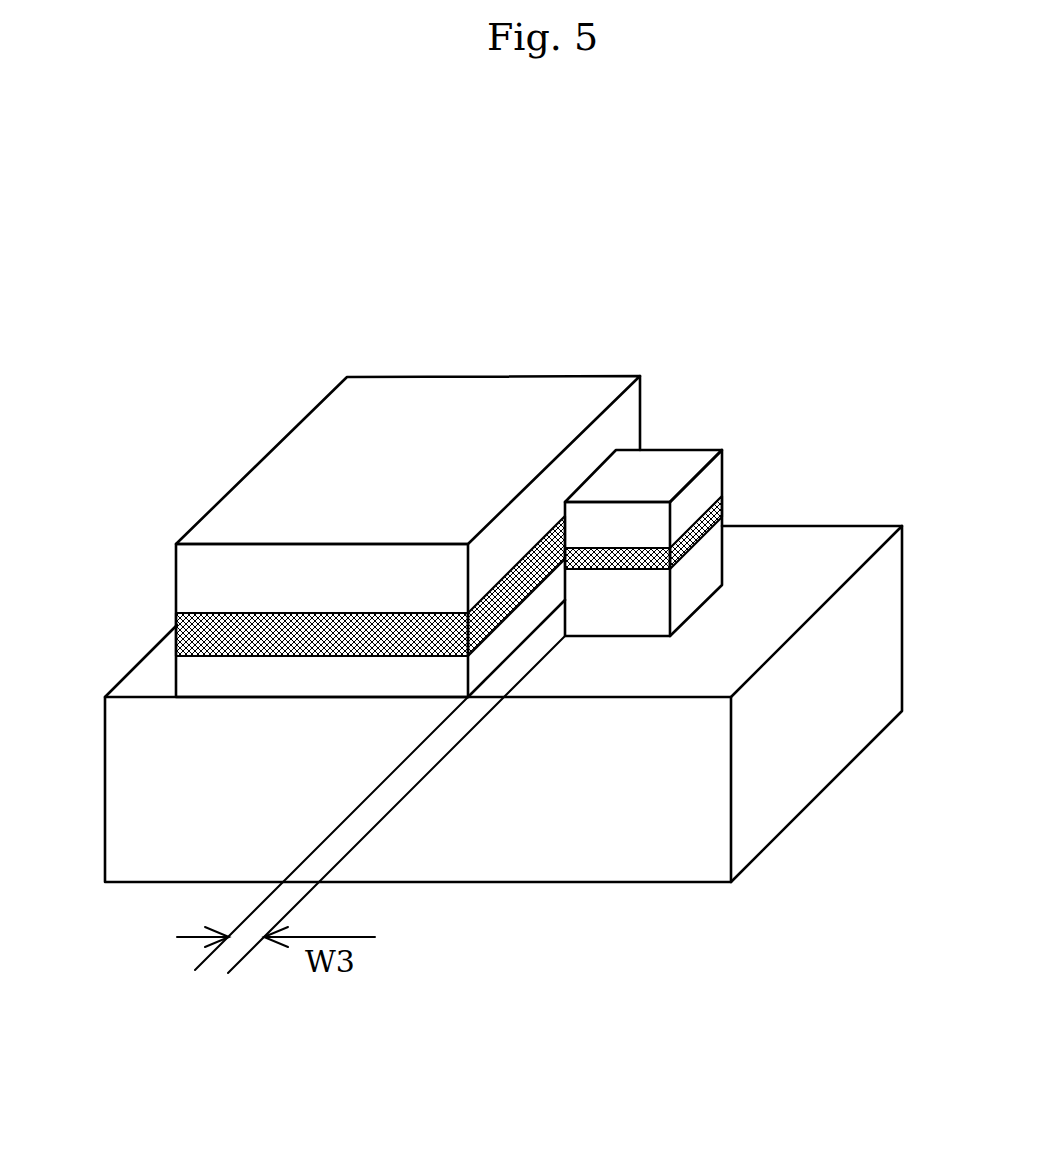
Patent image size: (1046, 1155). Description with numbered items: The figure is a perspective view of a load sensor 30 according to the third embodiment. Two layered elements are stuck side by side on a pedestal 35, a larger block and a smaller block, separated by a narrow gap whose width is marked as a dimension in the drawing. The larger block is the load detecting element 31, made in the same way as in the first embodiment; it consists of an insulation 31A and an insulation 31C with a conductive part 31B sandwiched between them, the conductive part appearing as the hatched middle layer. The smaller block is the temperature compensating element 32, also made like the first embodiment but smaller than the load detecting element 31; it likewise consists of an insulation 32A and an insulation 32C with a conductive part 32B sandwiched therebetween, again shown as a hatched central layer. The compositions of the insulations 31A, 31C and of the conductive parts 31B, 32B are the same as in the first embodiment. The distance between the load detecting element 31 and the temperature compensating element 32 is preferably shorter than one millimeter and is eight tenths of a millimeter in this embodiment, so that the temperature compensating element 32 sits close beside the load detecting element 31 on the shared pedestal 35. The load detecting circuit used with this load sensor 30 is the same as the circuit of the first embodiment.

The load sensor 30 is at (287, 272).
The load detecting element 31 is at (343, 499).
The insulation 31A is at (200, 574).
The conductive part 31B is at (192, 657).
The insulation 31C is at (207, 683).
The temperature compensating element 32 is at (735, 466).
The insulation 32A is at (710, 474).
The conductive part 32B is at (723, 514).
The insulation 32C is at (710, 562).
The pedestal 35 is at (658, 855).